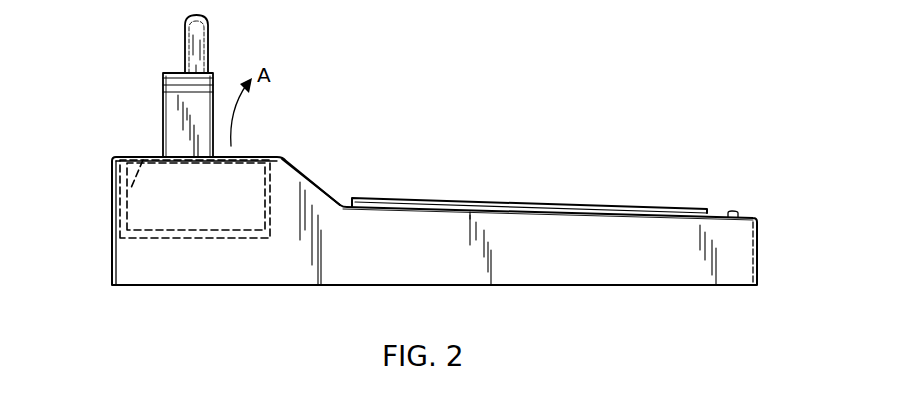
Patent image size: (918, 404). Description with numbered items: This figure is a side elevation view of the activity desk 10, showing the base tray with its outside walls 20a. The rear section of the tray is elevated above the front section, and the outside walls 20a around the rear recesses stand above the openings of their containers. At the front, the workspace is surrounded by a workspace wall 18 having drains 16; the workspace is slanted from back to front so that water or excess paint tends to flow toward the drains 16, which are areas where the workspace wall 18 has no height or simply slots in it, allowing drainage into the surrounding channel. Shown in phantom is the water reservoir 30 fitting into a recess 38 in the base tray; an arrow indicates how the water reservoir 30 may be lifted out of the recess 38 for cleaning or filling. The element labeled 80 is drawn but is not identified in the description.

The activity desk 10 is at (422, 158).
The drains 16 is at (720, 200).
The workspace wall 18 is at (561, 206).
The outside walls 20a is at (305, 177).
The water reservoir 30 is at (143, 157).
The recess 38 is at (118, 198).
The plug 80 is at (208, 40).